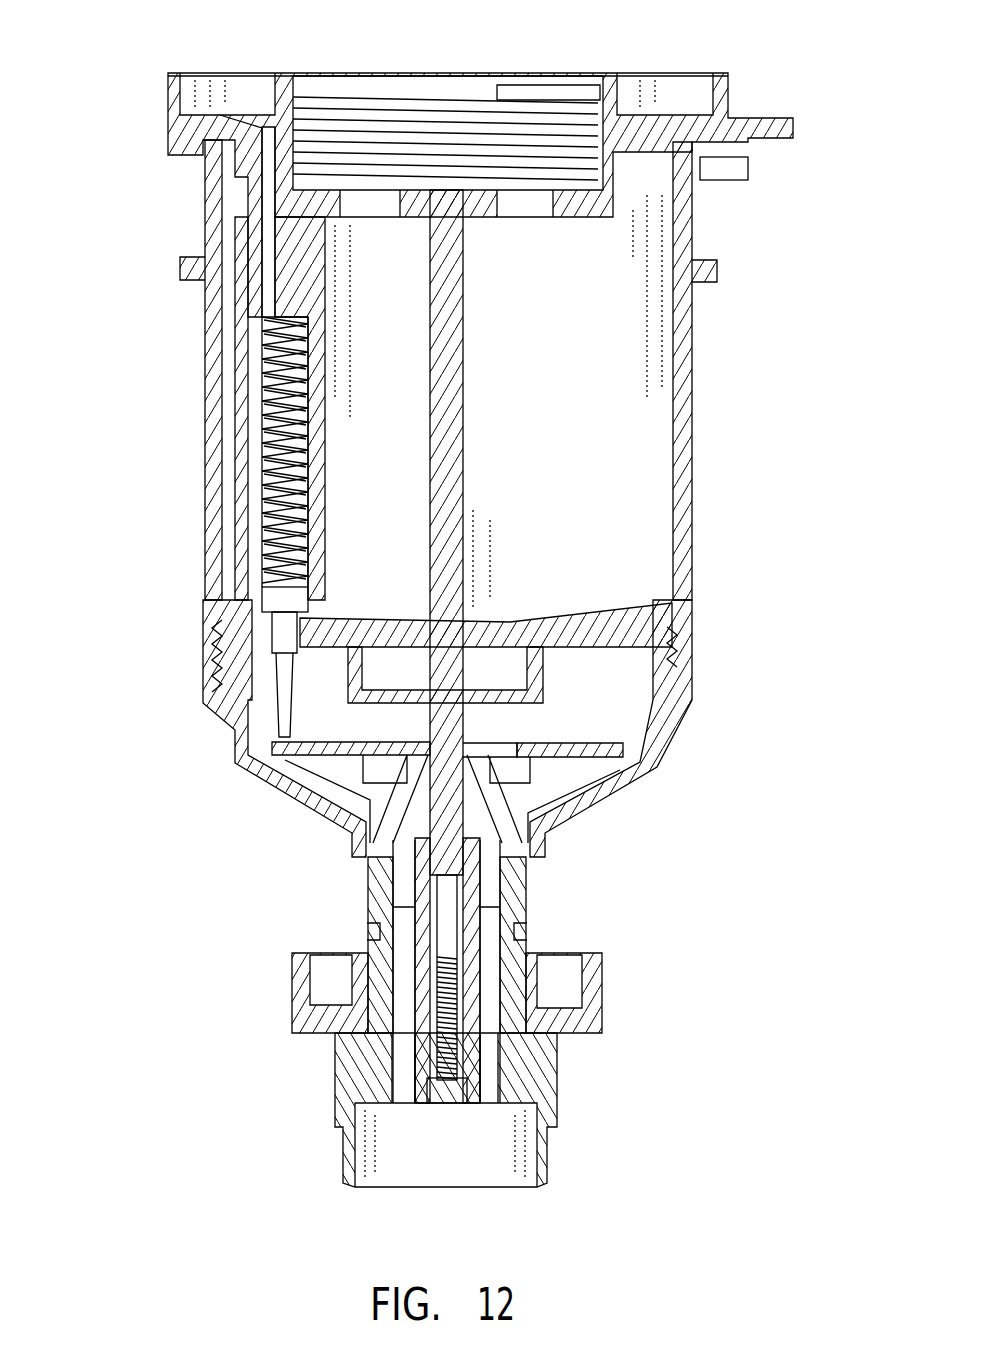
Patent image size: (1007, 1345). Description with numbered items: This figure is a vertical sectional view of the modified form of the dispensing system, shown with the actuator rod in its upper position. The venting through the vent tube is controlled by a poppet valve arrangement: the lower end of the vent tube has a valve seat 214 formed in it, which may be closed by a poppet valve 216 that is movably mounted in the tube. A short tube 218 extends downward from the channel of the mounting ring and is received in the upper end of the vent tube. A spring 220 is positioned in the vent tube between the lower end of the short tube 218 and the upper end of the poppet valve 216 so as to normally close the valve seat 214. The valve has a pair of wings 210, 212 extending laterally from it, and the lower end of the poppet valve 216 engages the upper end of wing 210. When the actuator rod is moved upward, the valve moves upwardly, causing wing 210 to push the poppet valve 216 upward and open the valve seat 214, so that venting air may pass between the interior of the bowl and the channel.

The short tube 218 is at (283, 287).
The spring 220 is at (262, 425).
The valve seat 214 is at (315, 613).
The poppet valve 216 is at (290, 667).
The wing 210 is at (280, 750).
The wing 212 is at (625, 752).